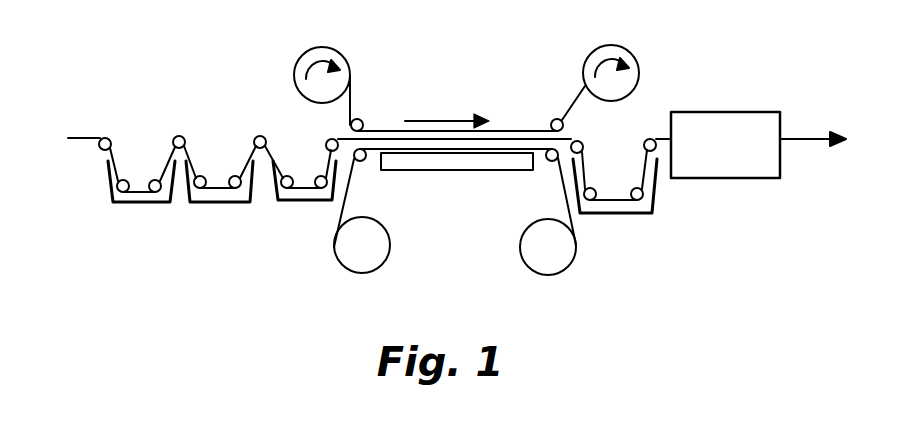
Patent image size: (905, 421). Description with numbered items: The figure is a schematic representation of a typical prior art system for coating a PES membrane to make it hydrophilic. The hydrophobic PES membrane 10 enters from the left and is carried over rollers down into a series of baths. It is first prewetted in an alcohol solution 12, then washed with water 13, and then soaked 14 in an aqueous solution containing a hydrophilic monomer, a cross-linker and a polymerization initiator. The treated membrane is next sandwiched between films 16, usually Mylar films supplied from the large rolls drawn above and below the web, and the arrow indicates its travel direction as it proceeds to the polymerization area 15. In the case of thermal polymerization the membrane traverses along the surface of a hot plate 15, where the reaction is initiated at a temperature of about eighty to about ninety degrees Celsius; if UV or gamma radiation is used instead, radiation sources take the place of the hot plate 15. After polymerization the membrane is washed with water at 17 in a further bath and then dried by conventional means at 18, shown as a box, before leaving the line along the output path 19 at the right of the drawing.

The hydrophobic PES membrane 10 is at (82, 138).
The alcohol solution 12 is at (137, 168).
The water wash 13 is at (219, 168).
The soaking bath 14 is at (303, 165).
The polymerization area / hot plate 15 is at (473, 170).
The films 16 is at (312, 46).
The water wash station 17 is at (630, 207).
The dryer 18 is at (725, 145).
The output web 19 is at (797, 139).